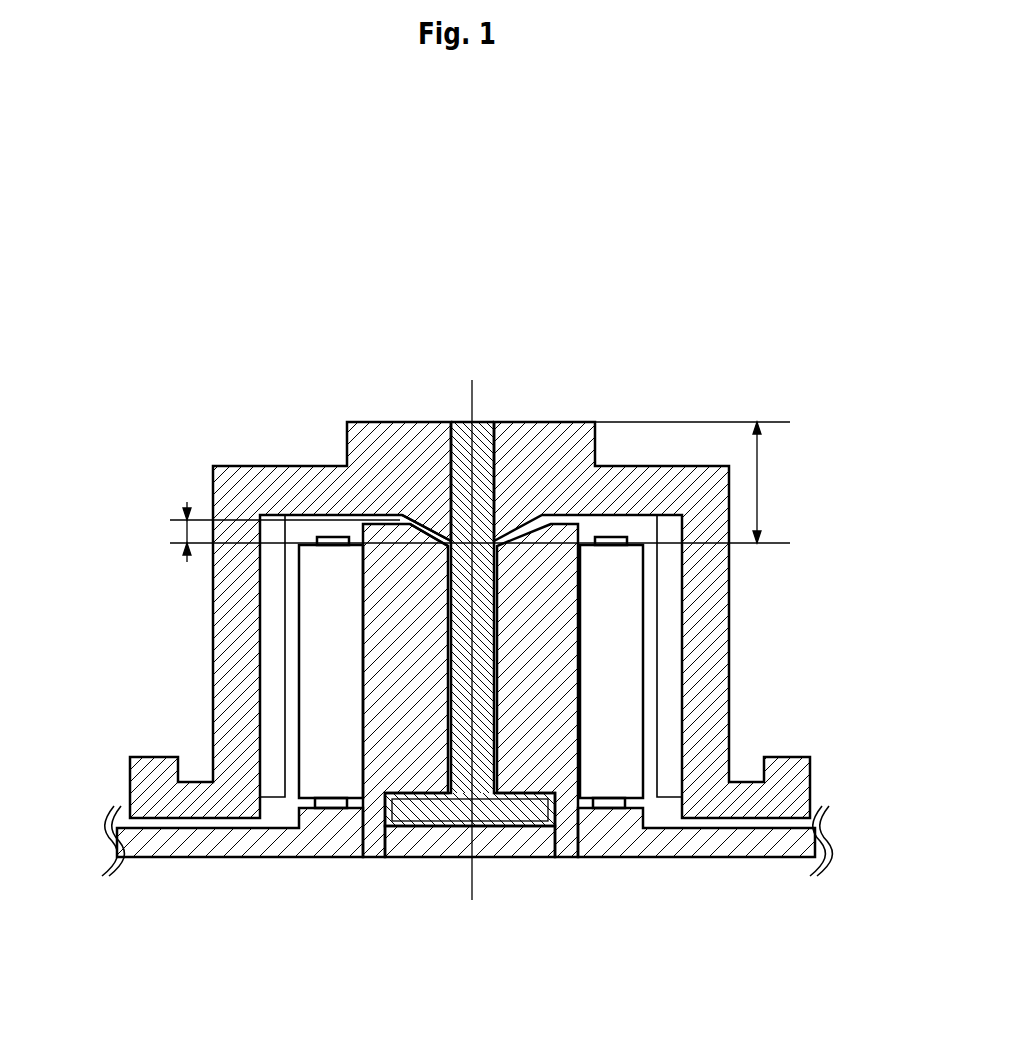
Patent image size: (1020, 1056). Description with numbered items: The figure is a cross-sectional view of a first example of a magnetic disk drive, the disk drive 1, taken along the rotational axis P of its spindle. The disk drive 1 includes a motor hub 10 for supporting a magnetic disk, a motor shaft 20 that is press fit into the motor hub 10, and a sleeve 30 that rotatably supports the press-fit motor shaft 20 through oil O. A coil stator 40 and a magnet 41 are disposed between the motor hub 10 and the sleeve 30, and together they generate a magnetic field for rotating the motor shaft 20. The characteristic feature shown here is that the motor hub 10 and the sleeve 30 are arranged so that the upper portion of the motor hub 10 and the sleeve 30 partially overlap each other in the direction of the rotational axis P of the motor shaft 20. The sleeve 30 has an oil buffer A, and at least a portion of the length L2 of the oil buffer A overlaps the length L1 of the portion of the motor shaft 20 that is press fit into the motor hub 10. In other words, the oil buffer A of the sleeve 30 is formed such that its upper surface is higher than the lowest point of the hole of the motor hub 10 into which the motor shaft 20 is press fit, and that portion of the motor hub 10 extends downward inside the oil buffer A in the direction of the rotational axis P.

The disk drive 1 is at (473, 207).
The motor hub 10 is at (569, 426).
The motor shaft 20 is at (483, 422).
The sleeve 30 is at (558, 580).
The coil stator 40 is at (598, 632).
The magnet 41 is at (672, 707).
The oil buffer A is at (402, 522).
The oil O is at (437, 530).
The rotational axis P is at (470, 629).
The length of the press-fit portion L1 is at (485, 482).
The length of the oil buffer L2 is at (262, 532).